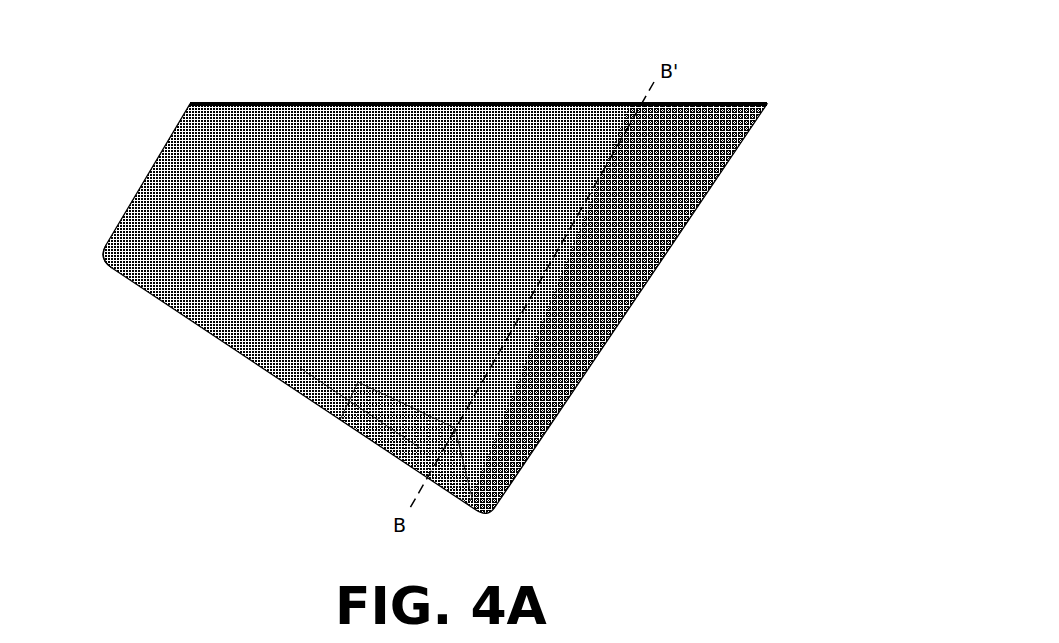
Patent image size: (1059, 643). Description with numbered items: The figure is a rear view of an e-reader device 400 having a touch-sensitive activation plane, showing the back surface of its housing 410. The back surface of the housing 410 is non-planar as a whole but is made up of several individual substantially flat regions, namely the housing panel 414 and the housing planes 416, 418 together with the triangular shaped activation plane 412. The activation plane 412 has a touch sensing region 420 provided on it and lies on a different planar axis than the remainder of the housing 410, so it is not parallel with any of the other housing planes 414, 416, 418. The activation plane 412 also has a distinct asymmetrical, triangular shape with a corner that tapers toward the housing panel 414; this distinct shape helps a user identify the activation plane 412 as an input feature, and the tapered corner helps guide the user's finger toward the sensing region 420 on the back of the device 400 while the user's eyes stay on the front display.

The e-reader device 400 is at (722, 32).
The housing 410 is at (215, 388).
The activation plane 412 is at (398, 427).
The housing panel 414 is at (166, 197).
The housing plane 416 is at (455, 128).
The housing plane 418 is at (595, 312).
The touch sensing region 420 is at (357, 384).